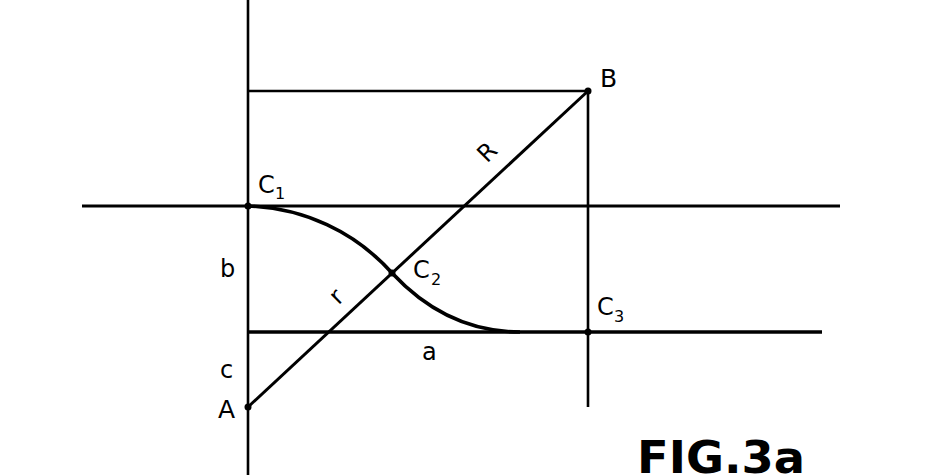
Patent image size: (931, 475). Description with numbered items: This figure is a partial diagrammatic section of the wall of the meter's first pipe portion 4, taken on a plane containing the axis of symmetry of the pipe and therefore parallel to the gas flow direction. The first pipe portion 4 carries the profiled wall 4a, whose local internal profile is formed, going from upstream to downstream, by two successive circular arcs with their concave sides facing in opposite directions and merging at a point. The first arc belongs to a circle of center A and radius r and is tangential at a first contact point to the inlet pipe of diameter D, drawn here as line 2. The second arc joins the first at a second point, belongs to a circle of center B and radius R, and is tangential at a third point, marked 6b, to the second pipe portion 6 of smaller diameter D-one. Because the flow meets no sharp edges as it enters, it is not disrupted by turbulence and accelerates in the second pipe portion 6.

The first straight line (thread) segment 2 is at (155, 205).
The first pipe portion 4 is at (370, 447).
The profiled wall 4a is at (366, 246).
The second pipe portion 6 is at (768, 335).
The junction point C3 of transition curve and line 6 6b is at (590, 335).